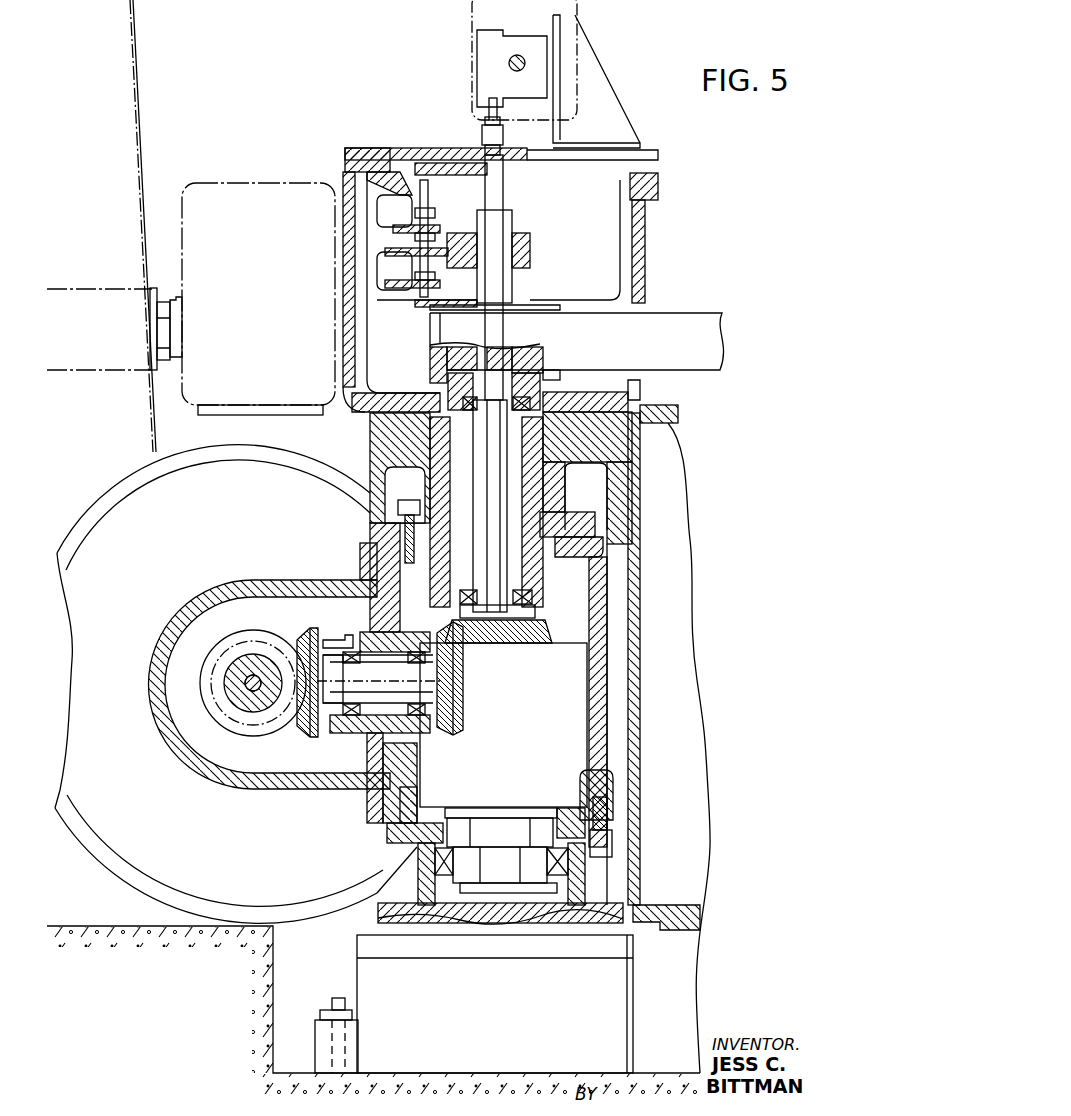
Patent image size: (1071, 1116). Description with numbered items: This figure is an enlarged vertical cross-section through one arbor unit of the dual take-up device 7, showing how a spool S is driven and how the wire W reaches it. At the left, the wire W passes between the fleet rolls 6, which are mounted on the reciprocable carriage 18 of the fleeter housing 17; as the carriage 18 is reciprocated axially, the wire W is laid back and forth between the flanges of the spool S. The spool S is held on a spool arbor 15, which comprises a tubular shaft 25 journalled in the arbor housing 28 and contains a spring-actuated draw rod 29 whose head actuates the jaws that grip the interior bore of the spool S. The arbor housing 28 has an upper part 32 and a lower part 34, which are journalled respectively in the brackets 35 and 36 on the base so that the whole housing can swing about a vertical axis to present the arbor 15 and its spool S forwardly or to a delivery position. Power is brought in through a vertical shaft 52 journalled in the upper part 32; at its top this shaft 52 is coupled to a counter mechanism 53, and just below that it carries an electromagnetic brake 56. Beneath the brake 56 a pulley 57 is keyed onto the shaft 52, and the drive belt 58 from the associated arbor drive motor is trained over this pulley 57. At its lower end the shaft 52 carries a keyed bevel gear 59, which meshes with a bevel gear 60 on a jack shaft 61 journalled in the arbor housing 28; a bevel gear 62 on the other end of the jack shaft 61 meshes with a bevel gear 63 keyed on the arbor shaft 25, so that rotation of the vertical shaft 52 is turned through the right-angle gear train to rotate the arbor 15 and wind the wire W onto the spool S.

The wire W is at (130, 26).
The fleet rolls 6 is at (104, 289).
The dual take-up device 7 is at (318, 114).
The fleeter housing 17 is at (205, 181).
The reciprocable carriage 18 is at (175, 362).
The counter mechanism 53 is at (470, 15).
The vertical shaft 52 is at (488, 103).
The electromagnetic brake 56 is at (368, 263).
The drive belt 58 is at (430, 325).
The pulley 57 is at (430, 359).
The bracket 35 is at (370, 420).
The spool S is at (320, 458).
The upper part of the arbor housing 32 is at (585, 512).
The spring-actuated draw rod 29 is at (262, 678).
The tubular shaft 25 is at (235, 662).
The spool arbor 15 is at (230, 712).
The jack shaft 61 is at (385, 689).
The bevel gear 59 is at (543, 642).
The bevel gear 60 is at (447, 733).
The bevel gear 62 is at (305, 738).
The bevel gear 63 is at (240, 738).
The arbor housing 28 is at (608, 763).
The lower part of the arbor housing 34 is at (400, 883).
The bracket 36 is at (377, 921).